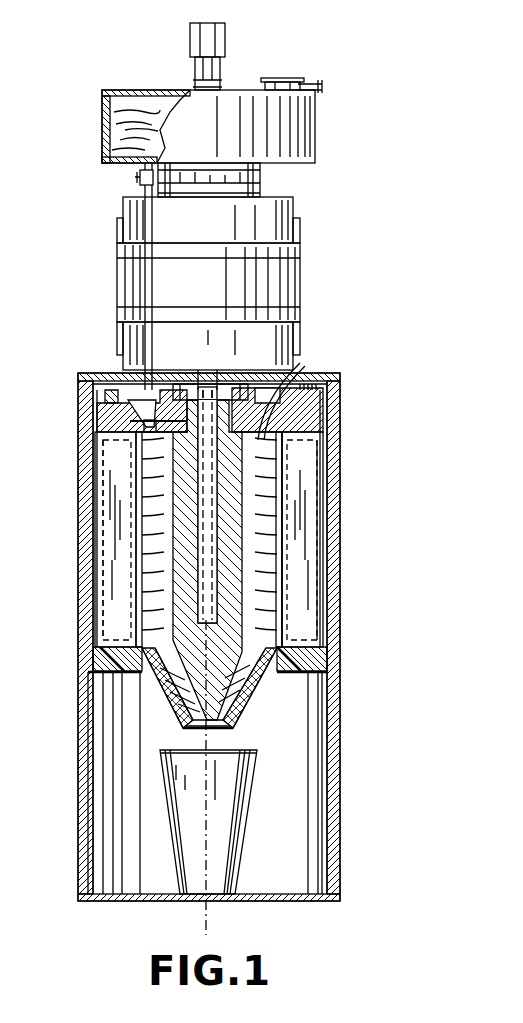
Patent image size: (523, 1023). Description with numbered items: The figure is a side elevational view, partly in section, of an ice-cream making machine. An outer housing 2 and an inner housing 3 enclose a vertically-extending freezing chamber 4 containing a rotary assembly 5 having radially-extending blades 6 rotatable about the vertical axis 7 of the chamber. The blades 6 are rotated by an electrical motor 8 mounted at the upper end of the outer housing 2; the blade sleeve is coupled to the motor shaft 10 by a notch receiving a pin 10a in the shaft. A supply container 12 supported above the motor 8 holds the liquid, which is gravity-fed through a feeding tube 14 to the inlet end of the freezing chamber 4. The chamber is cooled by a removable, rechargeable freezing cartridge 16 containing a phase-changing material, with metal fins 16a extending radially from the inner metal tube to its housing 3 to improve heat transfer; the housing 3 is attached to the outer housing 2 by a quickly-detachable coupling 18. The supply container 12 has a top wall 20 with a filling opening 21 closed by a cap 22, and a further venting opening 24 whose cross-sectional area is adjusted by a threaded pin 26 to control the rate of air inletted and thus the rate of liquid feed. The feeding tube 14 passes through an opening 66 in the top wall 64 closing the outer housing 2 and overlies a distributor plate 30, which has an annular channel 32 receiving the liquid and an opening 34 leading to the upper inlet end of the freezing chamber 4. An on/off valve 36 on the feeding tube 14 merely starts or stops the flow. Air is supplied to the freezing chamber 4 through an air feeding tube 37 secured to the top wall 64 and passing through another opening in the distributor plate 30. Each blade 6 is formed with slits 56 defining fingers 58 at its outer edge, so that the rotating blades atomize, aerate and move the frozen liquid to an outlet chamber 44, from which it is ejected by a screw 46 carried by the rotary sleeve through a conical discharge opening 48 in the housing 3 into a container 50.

The outer housing 2 is at (82, 467).
The inner housing 3 is at (90, 492).
The freezing chamber 4 is at (255, 545).
The rotary assembly 5 is at (147, 577).
The blades 6 is at (152, 522).
The vertical axis 7 is at (207, 783).
The electrical motor 8 is at (293, 232).
The motor shaft 10 is at (210, 470).
The pin 10a is at (205, 375).
The supply container 12 is at (313, 143).
The feeding tube 14 is at (147, 280).
The freezing cartridge 16 is at (312, 577).
The metal fins 16a is at (310, 513).
The quickly-detachable coupling 18 is at (332, 393).
The top wall 20 is at (233, 90).
The filling opening 21 is at (195, 70).
The cap 22 is at (220, 41).
The venting opening 24 is at (283, 77).
The threaded pin 26 is at (313, 87).
The distributor plate 30 is at (110, 408).
The annular channel 32 is at (147, 417).
The opening 34 is at (137, 422).
The on/off valve 36 is at (133, 178).
The air feeding tube 37 is at (300, 363).
The outlet chamber 44 is at (253, 664).
The screw 46 is at (175, 697).
The conical discharge opening 48 is at (217, 727).
The container 50 is at (245, 827).
The slits 56 is at (263, 615).
The fingers 58 is at (267, 630).
The top wall 64 is at (315, 374).
The opening 66 is at (130, 400).